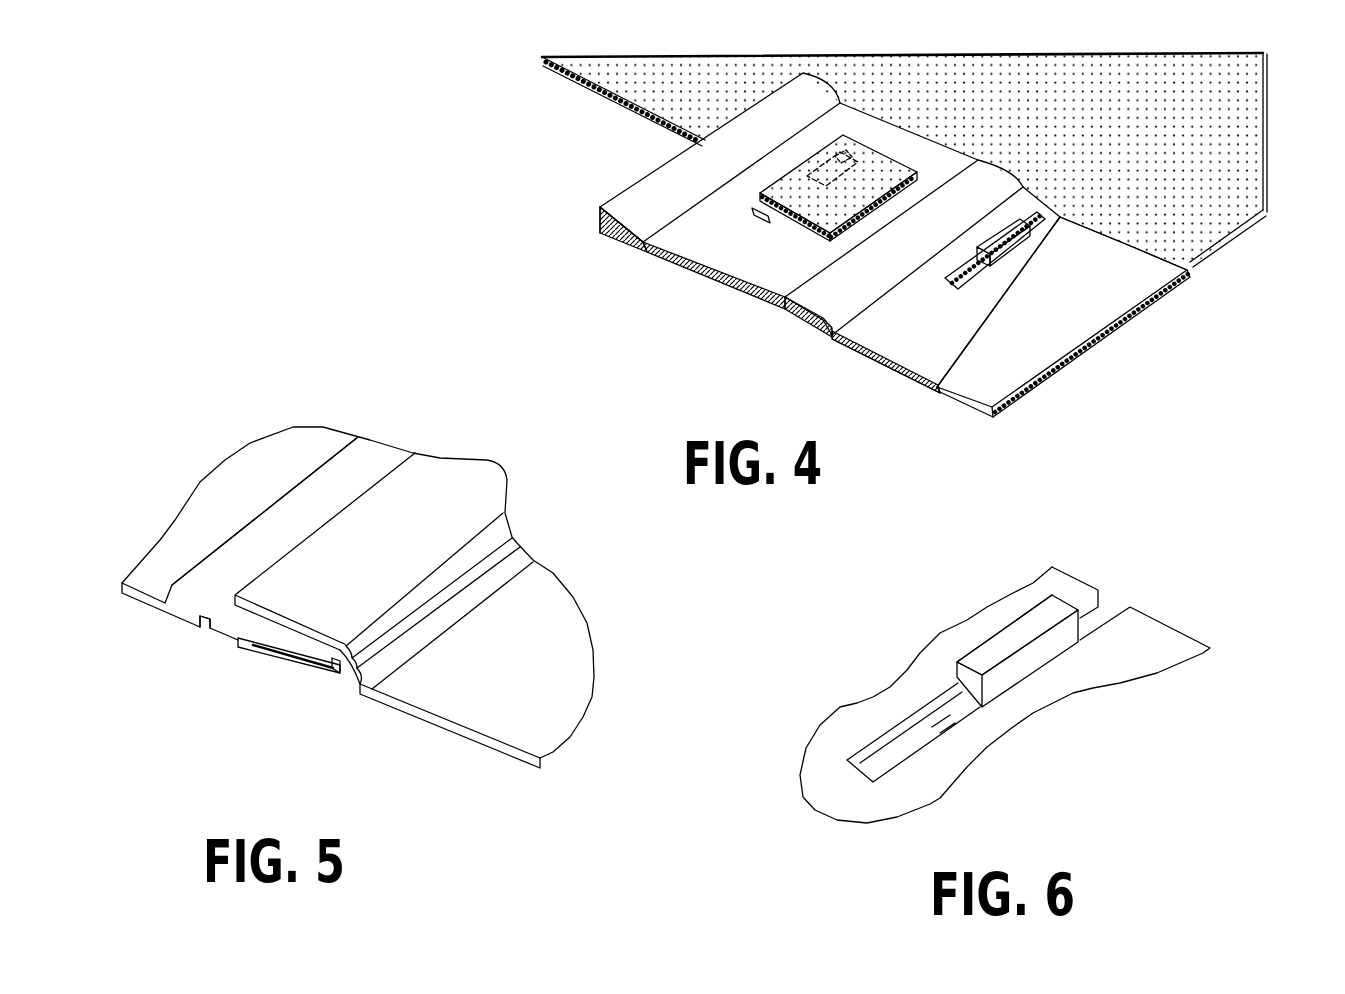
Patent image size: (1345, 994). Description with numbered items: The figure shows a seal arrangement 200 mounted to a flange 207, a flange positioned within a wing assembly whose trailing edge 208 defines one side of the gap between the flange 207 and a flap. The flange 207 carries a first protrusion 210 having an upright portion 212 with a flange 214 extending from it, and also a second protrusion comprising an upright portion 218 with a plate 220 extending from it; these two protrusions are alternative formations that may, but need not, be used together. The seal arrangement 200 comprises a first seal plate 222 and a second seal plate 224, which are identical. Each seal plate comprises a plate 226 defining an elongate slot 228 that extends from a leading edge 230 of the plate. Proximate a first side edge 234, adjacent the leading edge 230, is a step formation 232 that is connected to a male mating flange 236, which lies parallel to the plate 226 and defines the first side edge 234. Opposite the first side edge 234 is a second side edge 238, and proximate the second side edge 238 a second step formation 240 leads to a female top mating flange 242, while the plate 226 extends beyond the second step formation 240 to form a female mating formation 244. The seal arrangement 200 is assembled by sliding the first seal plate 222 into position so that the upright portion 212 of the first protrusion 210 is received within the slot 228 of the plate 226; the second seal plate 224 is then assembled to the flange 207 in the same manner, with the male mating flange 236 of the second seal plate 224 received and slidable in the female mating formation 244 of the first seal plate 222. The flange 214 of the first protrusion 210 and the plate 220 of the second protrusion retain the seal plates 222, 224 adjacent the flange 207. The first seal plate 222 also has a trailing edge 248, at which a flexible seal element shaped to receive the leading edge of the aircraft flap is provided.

In FIG. 4, the seal arrangement 200 is at (332, 170).
In FIG. 4, the flange 207 is at (1200, 237).
In FIG. 4, the trailing edge 208 is at (603, 95).
In FIG. 4, the first protrusion 210 is at (1030, 217).
In FIG. 6, the first protrusion 210 is at (1057, 610).
In FIG. 6, the upright portion 212 is at (972, 687).
In FIG. 6, the flange 214 is at (1000, 637).
In FIG. 4, the upright portion 218 is at (853, 163).
In FIG. 4, the plate 220 is at (887, 170).
In FIG. 4, the first seal plate 222 is at (1180, 361).
In FIG. 5, the first seal plate 222 is at (573, 636).
In FIG. 4, the second seal plate 224 is at (650, 324).
In FIG. 5, the second seal plate 224 is at (234, 474).
In FIG. 5, the plate 226 is at (515, 678).
In FIG. 6, the elongate slot 228 is at (870, 768).
In FIG. 4, the leading edge 230 is at (1100, 237).
In FIG. 4, the step formation 232 is at (927, 392).
In FIG. 5, the step formation 232 is at (152, 608).
In FIG. 4, the first side edge 234 is at (1012, 405).
In FIG. 5, the first side edge 234 is at (337, 670).
In FIG. 4, the male mating flange 236 is at (1060, 350).
In FIG. 5, the male mating flange 236 is at (372, 455).
In FIG. 5, the second side edge 238 is at (227, 603).
In FIG. 4, the second step formation 240 is at (627, 245).
In FIG. 5, the second step formation 240 is at (353, 673).
In FIG. 4, the female top mating flange 242 is at (785, 320).
In FIG. 5, the female top mating flange 242 is at (395, 563).
In FIG. 4, the female mating formation 244 is at (602, 210).
In FIG. 5, the female mating formation 244 is at (283, 663).
In FIG. 4, the trailing edge 248 is at (857, 353).